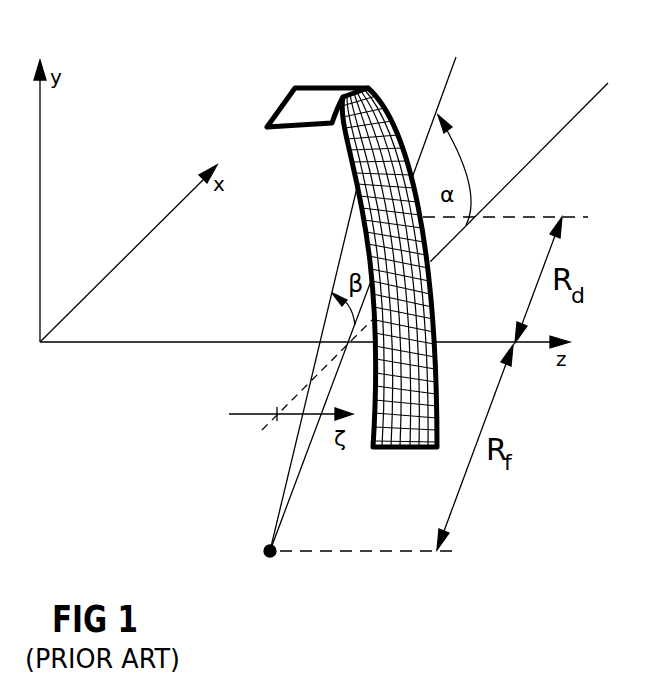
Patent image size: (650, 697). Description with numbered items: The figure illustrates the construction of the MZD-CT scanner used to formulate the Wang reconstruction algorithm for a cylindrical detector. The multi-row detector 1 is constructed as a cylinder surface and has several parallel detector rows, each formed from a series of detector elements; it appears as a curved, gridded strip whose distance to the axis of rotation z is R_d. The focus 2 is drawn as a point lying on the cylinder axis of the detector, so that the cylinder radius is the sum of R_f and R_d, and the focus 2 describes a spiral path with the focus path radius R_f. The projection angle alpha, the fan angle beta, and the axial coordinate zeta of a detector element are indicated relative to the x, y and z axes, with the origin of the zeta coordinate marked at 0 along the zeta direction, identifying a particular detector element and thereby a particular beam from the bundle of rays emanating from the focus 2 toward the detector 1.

The origin of zeta coordinate 0 is at (275, 429).
The multi-row detector 1 is at (298, 110).
The focus 2 is at (262, 551).